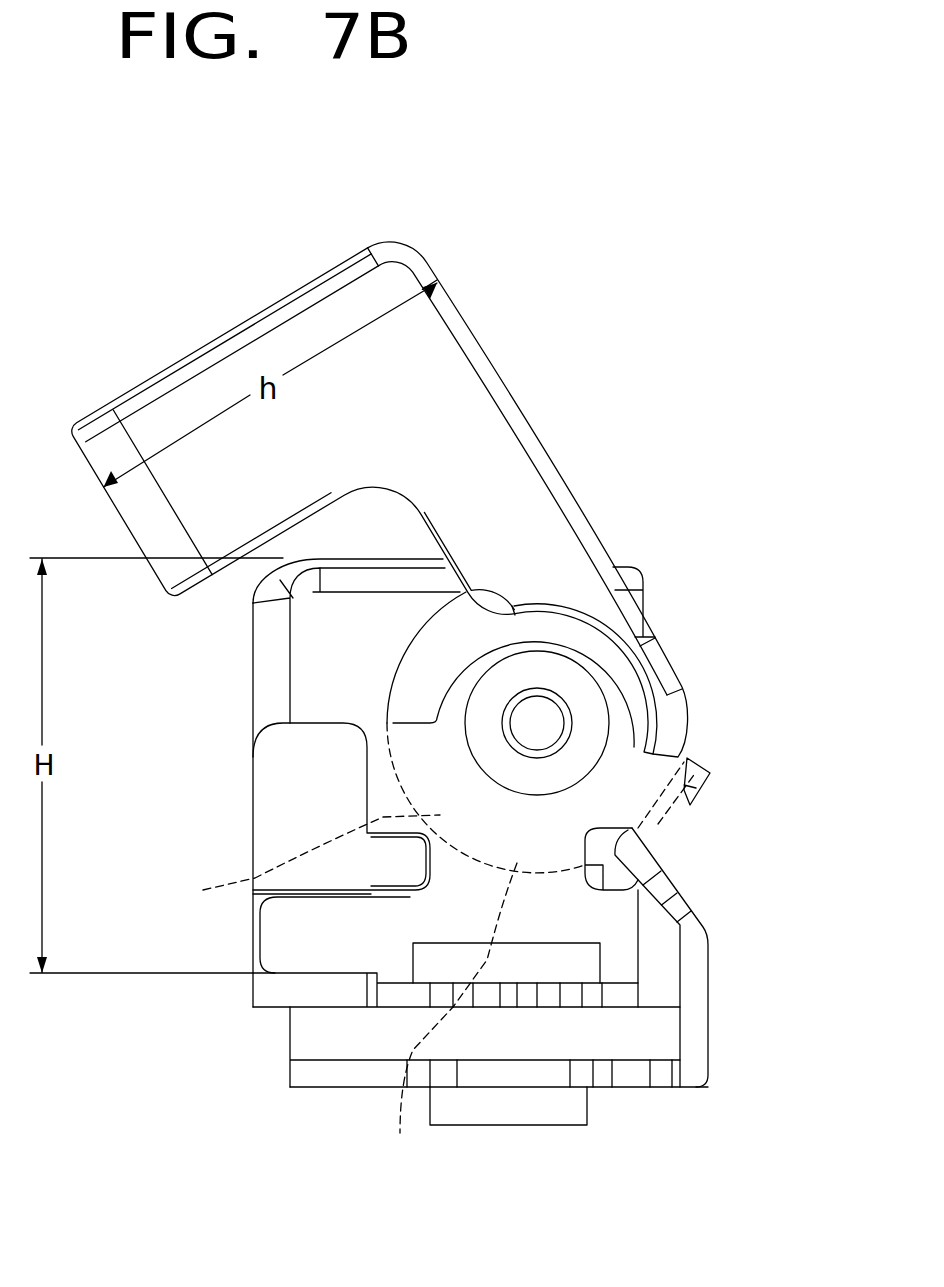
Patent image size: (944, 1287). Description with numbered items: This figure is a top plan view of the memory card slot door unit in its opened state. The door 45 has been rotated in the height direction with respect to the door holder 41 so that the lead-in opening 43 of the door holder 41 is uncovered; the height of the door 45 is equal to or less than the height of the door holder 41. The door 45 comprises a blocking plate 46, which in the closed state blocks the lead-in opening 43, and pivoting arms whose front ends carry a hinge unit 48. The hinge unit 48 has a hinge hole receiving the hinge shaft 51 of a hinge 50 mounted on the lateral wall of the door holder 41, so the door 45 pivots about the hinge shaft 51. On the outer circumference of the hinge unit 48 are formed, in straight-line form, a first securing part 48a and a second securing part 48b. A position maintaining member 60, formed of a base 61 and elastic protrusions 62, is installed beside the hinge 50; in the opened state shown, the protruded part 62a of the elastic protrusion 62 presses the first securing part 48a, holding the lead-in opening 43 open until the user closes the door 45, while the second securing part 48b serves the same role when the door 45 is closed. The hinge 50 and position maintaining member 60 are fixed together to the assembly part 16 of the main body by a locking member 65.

The assembly part 16 is at (343, 1047).
The door holder 41 is at (252, 670).
The lead-in opening 43 is at (252, 788).
The door 45 is at (467, 396).
The blocking plate 46 is at (137, 390).
The hinge unit 48 is at (374, 816).
The first securing part 48a is at (663, 803).
The second securing part 48b is at (445, 1014).
The hinge 50 is at (312, 946).
The hinge shaft 51 is at (540, 715).
The position maintaining member 60 is at (722, 1004).
The base 61 is at (627, 1075).
The elastic protrusion 62 is at (697, 943).
The protruded part 62a is at (640, 845).
The locking member 65 is at (513, 1113).